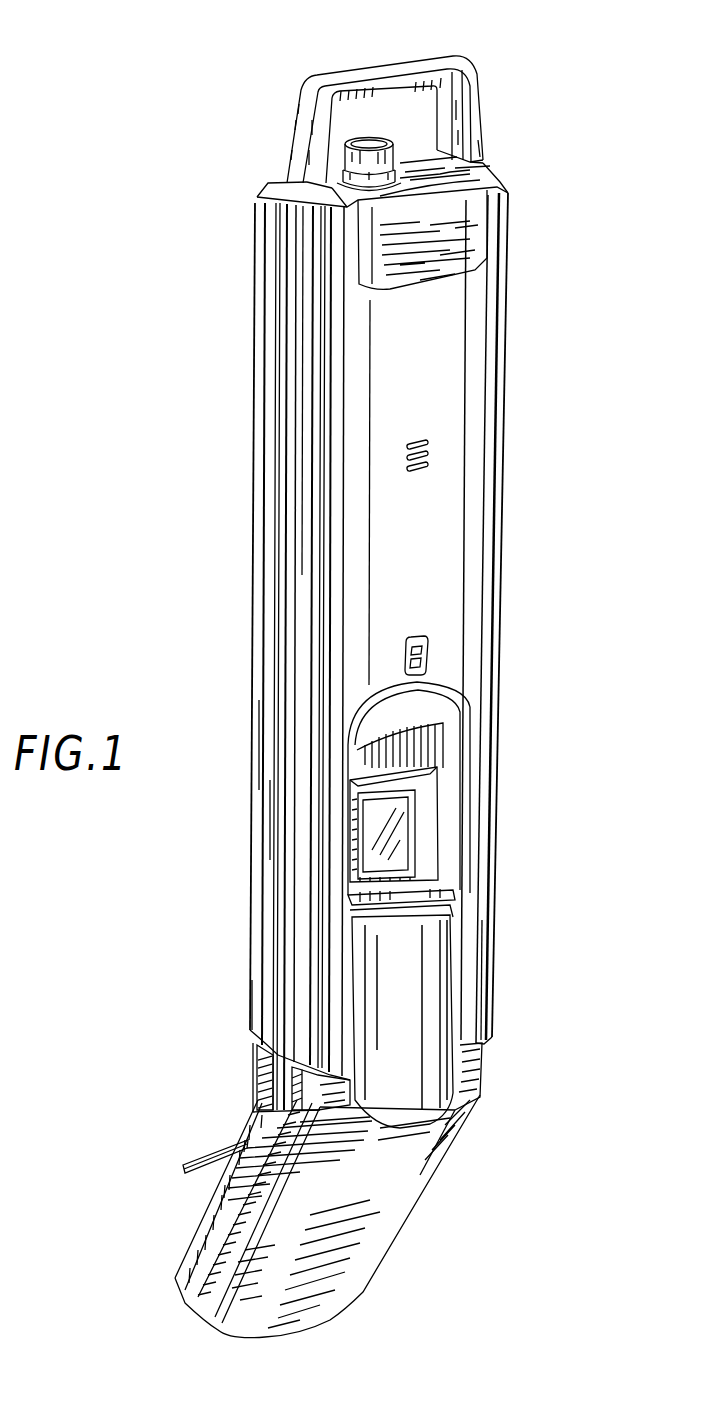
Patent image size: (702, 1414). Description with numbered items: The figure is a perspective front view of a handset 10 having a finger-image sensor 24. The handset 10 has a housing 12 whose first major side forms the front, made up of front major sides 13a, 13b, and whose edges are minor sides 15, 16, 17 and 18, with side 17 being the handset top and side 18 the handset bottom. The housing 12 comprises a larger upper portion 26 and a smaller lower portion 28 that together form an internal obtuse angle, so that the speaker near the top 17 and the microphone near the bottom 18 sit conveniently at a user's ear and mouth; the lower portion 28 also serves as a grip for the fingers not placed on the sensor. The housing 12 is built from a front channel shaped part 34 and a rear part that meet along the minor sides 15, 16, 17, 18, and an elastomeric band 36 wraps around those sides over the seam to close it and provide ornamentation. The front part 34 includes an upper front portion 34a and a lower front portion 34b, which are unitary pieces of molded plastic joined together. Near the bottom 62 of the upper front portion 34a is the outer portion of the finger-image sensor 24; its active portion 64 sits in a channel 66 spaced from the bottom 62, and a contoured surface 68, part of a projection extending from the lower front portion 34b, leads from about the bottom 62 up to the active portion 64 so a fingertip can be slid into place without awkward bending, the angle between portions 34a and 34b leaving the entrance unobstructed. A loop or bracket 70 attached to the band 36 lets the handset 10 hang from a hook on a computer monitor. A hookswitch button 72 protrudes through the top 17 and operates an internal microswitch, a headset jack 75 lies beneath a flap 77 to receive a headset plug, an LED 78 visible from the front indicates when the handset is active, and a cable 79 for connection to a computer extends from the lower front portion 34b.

The handset 10 is at (564, 567).
The housing 12 is at (444, 327).
The front major side 13a is at (448, 386).
The front major side 13b is at (352, 1243).
The minor side 15 is at (265, 820).
The minor side 16 is at (503, 490).
The top 17 is at (421, 150).
The bottom 18 is at (213, 1324).
The finger-image sensor 24 is at (423, 858).
The upper portion 26 is at (253, 1005).
The lower portion 28 is at (212, 1224).
The front channel shaped part 34 is at (478, 995).
The upper front portion 34a is at (480, 952).
The lower front portion 34b is at (425, 1168).
The band 36 is at (253, 772).
The bottom 62 is at (305, 1076).
The active portion 64 is at (400, 828).
The channel 66 is at (430, 743).
The contoured surface 68 is at (397, 1107).
The bracket 70 is at (395, 60).
The hookswitch button 72 is at (370, 138).
The headset jack 75 is at (490, 145).
The flap 77 is at (497, 185).
The LED 78 is at (428, 654).
The cable 79 is at (218, 1146).